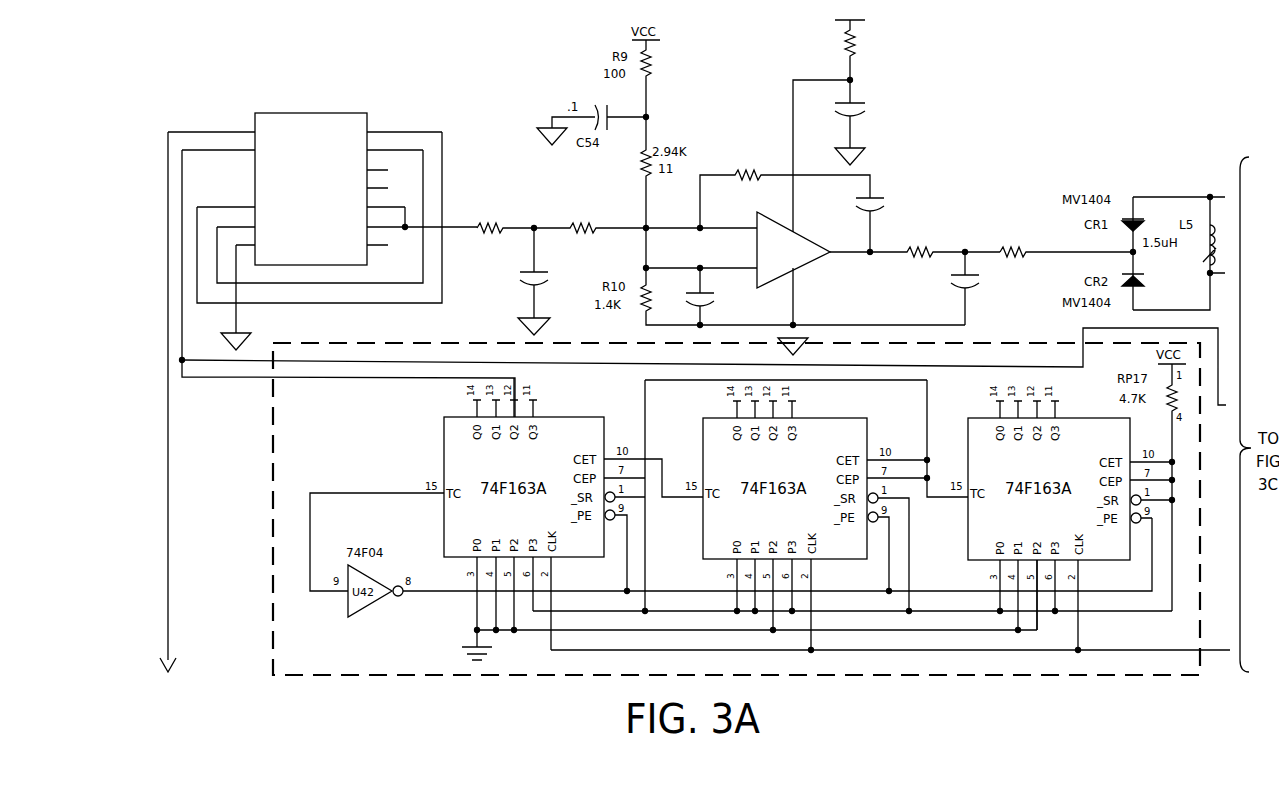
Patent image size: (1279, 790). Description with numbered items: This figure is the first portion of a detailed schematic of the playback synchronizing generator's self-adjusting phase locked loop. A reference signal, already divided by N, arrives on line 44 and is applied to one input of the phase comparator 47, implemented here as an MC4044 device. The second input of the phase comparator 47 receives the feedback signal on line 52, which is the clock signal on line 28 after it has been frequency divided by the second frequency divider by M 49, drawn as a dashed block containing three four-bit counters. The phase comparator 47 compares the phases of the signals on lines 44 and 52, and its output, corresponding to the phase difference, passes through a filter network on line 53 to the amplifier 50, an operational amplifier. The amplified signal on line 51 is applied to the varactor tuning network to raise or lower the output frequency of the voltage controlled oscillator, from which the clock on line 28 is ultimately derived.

The line 44 is at (203, 131).
The phase comparator 47 is at (337, 125).
The line 52 is at (183, 176).
The line 53 is at (518, 226).
The amplifier 50 is at (800, 240).
The line 51 is at (1047, 250).
The second frequency divider by M 49 is at (285, 452).
The line 28 is at (1166, 650).